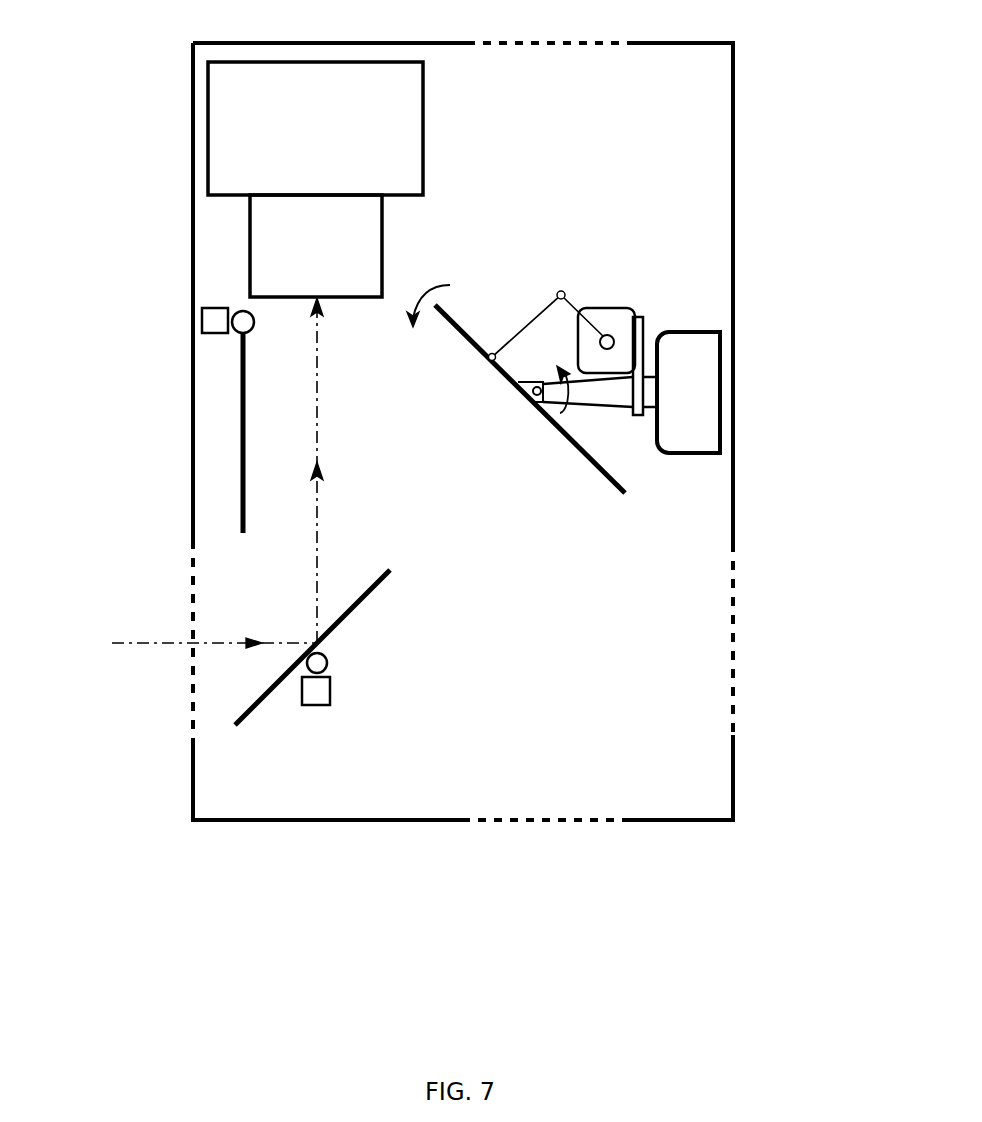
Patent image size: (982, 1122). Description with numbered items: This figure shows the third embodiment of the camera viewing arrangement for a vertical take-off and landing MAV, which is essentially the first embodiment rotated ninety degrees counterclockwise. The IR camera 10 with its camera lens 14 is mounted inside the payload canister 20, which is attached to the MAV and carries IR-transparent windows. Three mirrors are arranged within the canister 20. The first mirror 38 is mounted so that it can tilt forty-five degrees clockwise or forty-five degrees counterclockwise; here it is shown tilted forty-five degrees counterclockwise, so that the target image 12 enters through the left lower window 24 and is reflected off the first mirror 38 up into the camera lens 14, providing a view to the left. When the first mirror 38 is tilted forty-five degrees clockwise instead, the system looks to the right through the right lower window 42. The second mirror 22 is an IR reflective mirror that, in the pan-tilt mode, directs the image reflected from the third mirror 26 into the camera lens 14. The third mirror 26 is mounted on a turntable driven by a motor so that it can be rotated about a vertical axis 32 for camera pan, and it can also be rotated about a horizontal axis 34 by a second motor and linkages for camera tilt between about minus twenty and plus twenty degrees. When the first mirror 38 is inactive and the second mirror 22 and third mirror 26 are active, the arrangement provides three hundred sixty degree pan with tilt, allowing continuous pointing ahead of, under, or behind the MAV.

The IR camera 10 is at (230, 123).
The target image 12 is at (152, 643).
The camera lens 14 is at (265, 242).
The payload canister 20 is at (733, 282).
The mirror M2 22 is at (240, 463).
The left lower window 24 is at (190, 600).
The mirror M3 26 is at (568, 438).
The vertical axis 32 is at (573, 412).
The horizontal axis 34 is at (437, 282).
The mirror M1 38 is at (355, 612).
The right lower window 42 is at (732, 665).